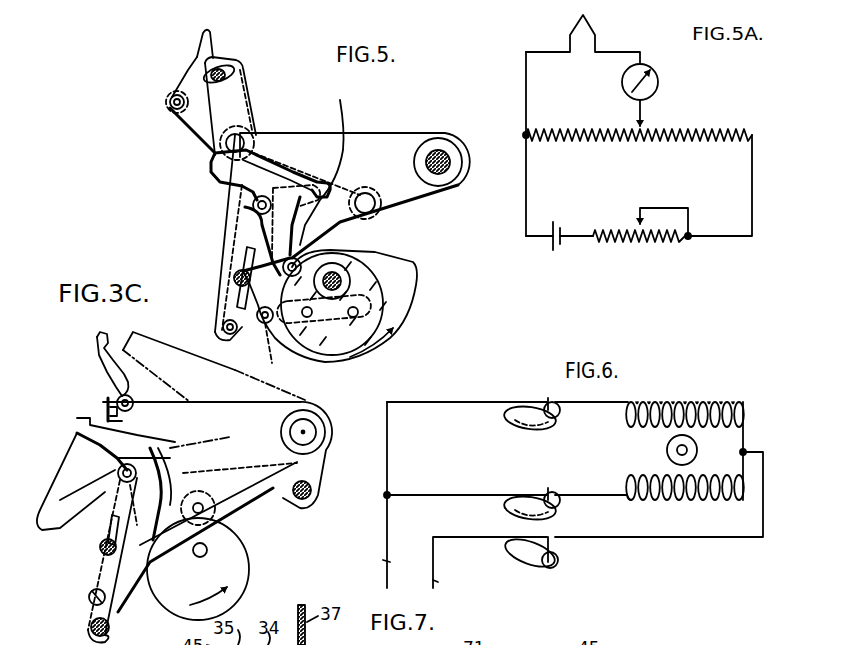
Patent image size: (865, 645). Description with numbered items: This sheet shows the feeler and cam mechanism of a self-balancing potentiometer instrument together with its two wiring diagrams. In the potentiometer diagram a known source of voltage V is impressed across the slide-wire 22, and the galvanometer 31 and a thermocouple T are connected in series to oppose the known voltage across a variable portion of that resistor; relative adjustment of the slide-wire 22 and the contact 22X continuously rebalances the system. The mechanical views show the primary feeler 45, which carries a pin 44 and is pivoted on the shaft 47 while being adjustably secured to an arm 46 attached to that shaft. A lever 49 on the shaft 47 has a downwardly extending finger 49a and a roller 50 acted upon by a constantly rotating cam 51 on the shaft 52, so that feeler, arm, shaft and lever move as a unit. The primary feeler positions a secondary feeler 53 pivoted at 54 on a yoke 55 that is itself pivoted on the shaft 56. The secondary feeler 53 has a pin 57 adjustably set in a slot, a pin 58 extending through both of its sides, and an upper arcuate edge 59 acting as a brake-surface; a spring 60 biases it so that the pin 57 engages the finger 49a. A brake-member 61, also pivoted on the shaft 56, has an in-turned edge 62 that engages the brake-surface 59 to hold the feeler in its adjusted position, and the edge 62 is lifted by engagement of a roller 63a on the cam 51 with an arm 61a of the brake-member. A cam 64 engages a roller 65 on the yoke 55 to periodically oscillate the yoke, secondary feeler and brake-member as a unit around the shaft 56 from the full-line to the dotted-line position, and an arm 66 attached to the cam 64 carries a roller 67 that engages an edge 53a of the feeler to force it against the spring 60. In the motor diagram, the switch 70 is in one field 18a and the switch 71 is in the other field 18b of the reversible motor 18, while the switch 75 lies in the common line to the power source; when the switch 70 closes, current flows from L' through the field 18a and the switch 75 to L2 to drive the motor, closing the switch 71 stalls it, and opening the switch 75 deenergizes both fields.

In FIG. 5, the pin 44 is at (170, 100).
In FIG. 5, the primary feeler 45 is at (215, 47).
In FIG. 5, the arm 46 is at (243, 73).
In FIG. 5, the shaft 47 is at (212, 153).
In FIG. 5, the lever 49 is at (223, 183).
In FIG. 5, the finger 49a is at (262, 325).
In FIG. 5, the roller 50 is at (377, 209).
In FIG. 5, the cam 51 is at (415, 279).
In FIG. 5, the shaft 52 is at (340, 272).
In FIG. 3C, the shaft 52 is at (207, 550).
In FIG. 5, the secondary feeler 53 is at (225, 253).
In FIG. 3C, the secondary feeler 53 is at (78, 452).
In FIG. 5, the edge 53a is at (245, 212).
In FIG. 5, the pivot 54 is at (222, 330).
In FIG. 3C, the pivot 54 is at (92, 612).
In FIG. 3C, the yoke 55 is at (152, 600).
In FIG. 5, the shaft 56 is at (462, 160).
In FIG. 3C, the shaft 56 is at (326, 432).
In FIG. 5, the pin 57 is at (234, 278).
In FIG. 3C, the pin 57 is at (100, 550).
In FIG. 5, the pin 58 is at (252, 205).
In FIG. 3C, the pin 58 is at (118, 481).
In FIG. 5, the arcuate edge 59 is at (322, 178).
In FIG. 3C, the arcuate edge 59 is at (170, 446).
In FIG. 3C, the spring 60 is at (90, 582).
In FIG. 5, the brake-member 61 is at (352, 142).
In FIG. 3C, the brake-member 61 is at (219, 402).
In FIG. 5, the arm 61a is at (327, 162).
In FIG. 5, the in-turned edge 62 is at (250, 140).
In FIG. 3C, the in-turned edge 62 is at (116, 404).
In FIG. 5, the roller 63a is at (298, 262).
In FIG. 5, the cam 64 is at (347, 345).
In FIG. 3C, the cam 64 is at (240, 577).
In FIG. 3C, the roller 65 is at (238, 516).
In FIG. 5, the arm 66 is at (277, 340).
In FIG. 5, the roller 67 is at (258, 366).
In FIG. 5A, the thermocouple T is at (589, 17).
In FIG. 5A, the galvanometer 31 is at (653, 68).
In FIG. 5A, the slide-wire 22 is at (697, 130).
In FIG. 5A, the contact 22X is at (637, 129).
In FIG. 5A, the source of voltage V is at (558, 252).
In FIG. 6, the motor 18 is at (668, 449).
In FIG. 6, the field 18a is at (692, 402).
In FIG. 6, the field 18b is at (692, 500).
In FIG. 6, the mercury switch 70 is at (513, 420).
In FIG. 6, the mercury switch 71 is at (508, 508).
In FIG. 6, the switch 75 is at (545, 564).
In FIG. 6, the power source lead L' is at (367, 556).
In FIG. 6, the power source lead L2 is at (437, 580).